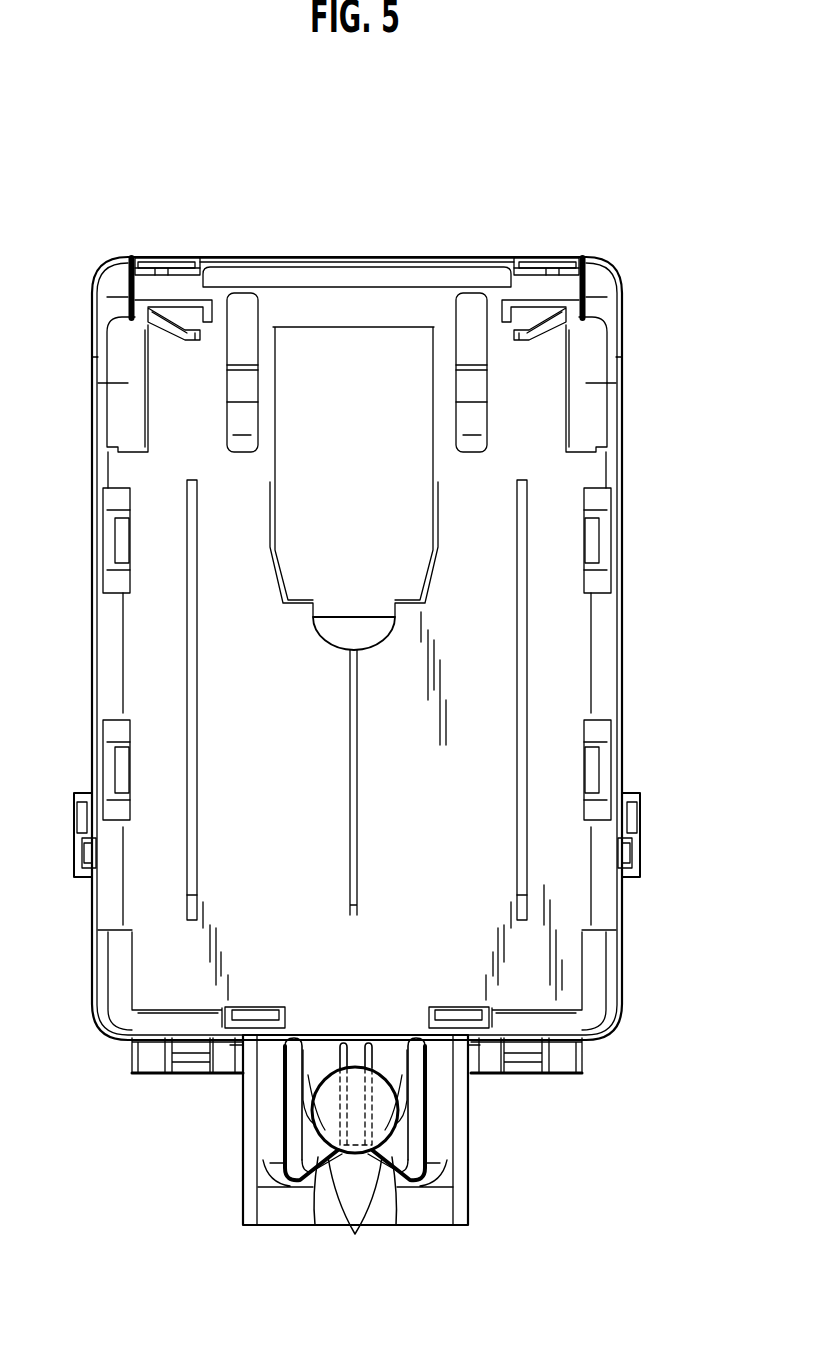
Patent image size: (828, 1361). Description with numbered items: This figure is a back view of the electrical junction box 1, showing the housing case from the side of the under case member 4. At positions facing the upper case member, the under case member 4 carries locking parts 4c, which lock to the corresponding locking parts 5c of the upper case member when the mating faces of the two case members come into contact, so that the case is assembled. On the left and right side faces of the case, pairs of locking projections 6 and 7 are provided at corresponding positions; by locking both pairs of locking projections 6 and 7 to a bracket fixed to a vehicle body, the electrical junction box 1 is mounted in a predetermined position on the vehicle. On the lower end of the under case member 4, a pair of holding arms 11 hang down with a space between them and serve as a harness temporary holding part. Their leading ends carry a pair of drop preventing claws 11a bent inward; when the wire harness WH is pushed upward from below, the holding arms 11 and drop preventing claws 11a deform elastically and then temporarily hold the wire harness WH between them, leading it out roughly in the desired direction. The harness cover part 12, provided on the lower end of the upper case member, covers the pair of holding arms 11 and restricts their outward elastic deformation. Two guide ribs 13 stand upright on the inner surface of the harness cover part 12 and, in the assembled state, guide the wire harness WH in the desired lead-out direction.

The electrical junction box 1 is at (381, 226).
The under case member 4 is at (567, 658).
The locking part 4c is at (166, 270).
The locking part 5c is at (142, 258).
The locking projection 6 is at (640, 853).
The locking projection 7 is at (640, 813).
The holding arm 11 is at (284, 1133).
The drop preventing claw 11a is at (388, 1228).
The harness cover part 12 is at (285, 1210).
The guide rib 13 is at (318, 1060).
The wire harness WH is at (432, 1160).